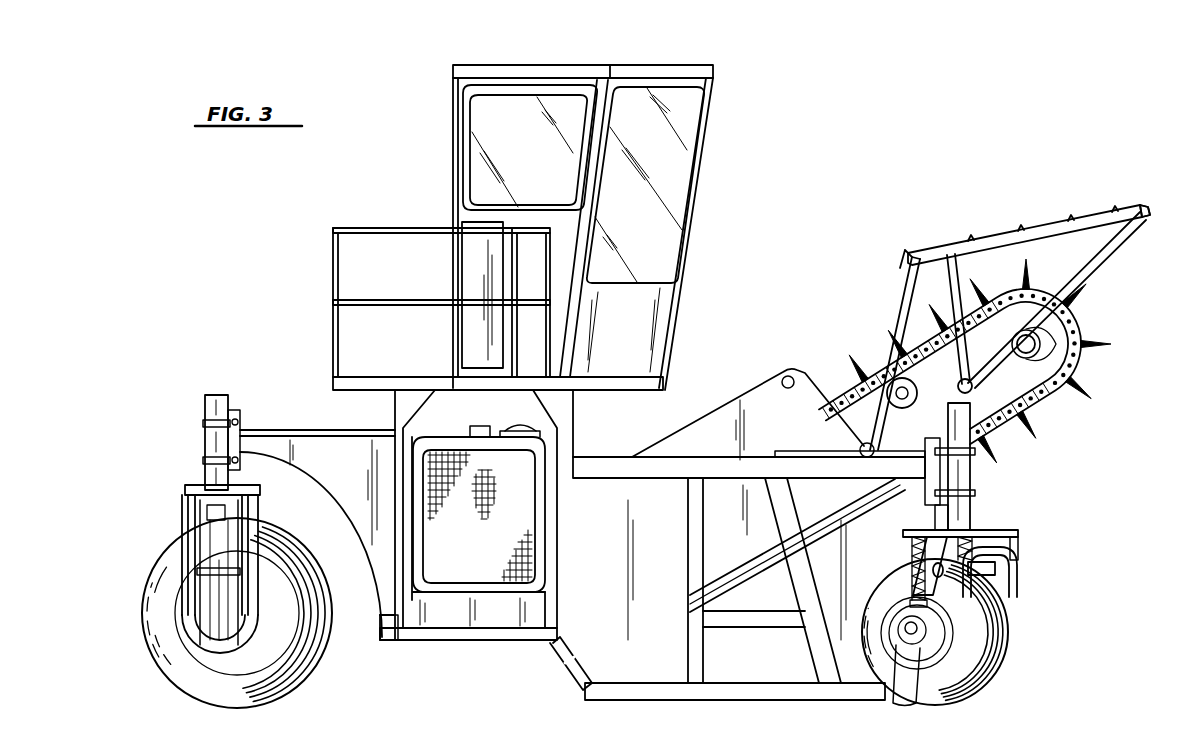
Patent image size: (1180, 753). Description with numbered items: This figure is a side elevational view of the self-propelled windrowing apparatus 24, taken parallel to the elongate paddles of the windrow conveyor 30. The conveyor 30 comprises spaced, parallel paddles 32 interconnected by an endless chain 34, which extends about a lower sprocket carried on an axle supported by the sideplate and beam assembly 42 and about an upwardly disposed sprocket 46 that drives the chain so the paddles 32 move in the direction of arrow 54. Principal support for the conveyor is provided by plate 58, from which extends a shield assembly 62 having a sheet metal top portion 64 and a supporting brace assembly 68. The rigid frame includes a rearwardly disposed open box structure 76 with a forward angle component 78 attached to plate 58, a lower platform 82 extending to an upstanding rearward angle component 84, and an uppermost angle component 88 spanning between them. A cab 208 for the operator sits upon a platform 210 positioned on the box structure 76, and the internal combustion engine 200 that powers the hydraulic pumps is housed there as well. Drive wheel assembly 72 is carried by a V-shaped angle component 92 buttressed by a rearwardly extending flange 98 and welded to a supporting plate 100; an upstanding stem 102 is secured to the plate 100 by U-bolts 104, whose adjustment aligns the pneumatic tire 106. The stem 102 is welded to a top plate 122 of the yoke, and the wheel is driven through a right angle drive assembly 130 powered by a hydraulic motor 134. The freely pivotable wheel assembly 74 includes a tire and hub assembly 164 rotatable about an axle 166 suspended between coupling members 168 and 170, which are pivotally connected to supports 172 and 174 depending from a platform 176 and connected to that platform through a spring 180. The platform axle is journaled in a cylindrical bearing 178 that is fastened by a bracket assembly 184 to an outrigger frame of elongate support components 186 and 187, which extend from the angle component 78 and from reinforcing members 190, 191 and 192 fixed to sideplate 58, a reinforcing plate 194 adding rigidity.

The windrowing apparatus 24 is at (810, 128).
The windrow conveyor 30 is at (860, 290).
The paddles 32 is at (1058, 420).
The endless chain 34 is at (870, 380).
The sideplate and beam assembly 42 is at (940, 398).
The upper sprocket 46 is at (1062, 336).
The direction arrow 54 is at (1120, 366).
The plate 58 is at (755, 402).
The shield assembly 62 is at (1051, 230).
The sheet metal top portion 64 is at (1100, 205).
The brace assembly 68 is at (905, 313).
The drive wheel assembly 72 is at (303, 688).
The wheel assembly 74 is at (1006, 680).
The open box structure 76 is at (455, 647).
The forward angle component 78 is at (572, 447).
The lower platform 82 is at (500, 645).
The rearward angle component 84 is at (398, 622).
The uppermost angle component 88 is at (494, 406).
The angle component 92 is at (317, 430).
The flange 98 is at (360, 497).
The supporting plate 100 is at (236, 416).
The stem 102 is at (206, 410).
The U-bolts 104 is at (205, 462).
The pneumatic tire 106 is at (188, 670).
The top plate 122 is at (262, 490).
The right angle drive assembly 130 is at (210, 625).
The hydraulic motor 134 is at (210, 545).
The tire and hub assembly 164 is at (990, 634).
The axle 166 is at (905, 690).
The coupling member 168 is at (912, 690).
The coupling member 170 is at (1005, 585).
The support 172 is at (955, 533).
The support 174 is at (1018, 548).
The platform 176 is at (1005, 530).
The cylindrical bearing 178 is at (965, 466).
The spring 180 is at (906, 553).
The bracket assembly 184 is at (975, 492).
The support component 186 is at (690, 447).
The support component 187 is at (750, 568).
The reinforcing member 190 is at (690, 561).
The reinforcing member 191 is at (776, 618).
The reinforcing member 192 is at (818, 655).
The reinforcing plate 194 is at (805, 451).
The internal combustion engine 200 is at (466, 438).
The cab 208 is at (674, 64).
The platform 210 is at (374, 378).